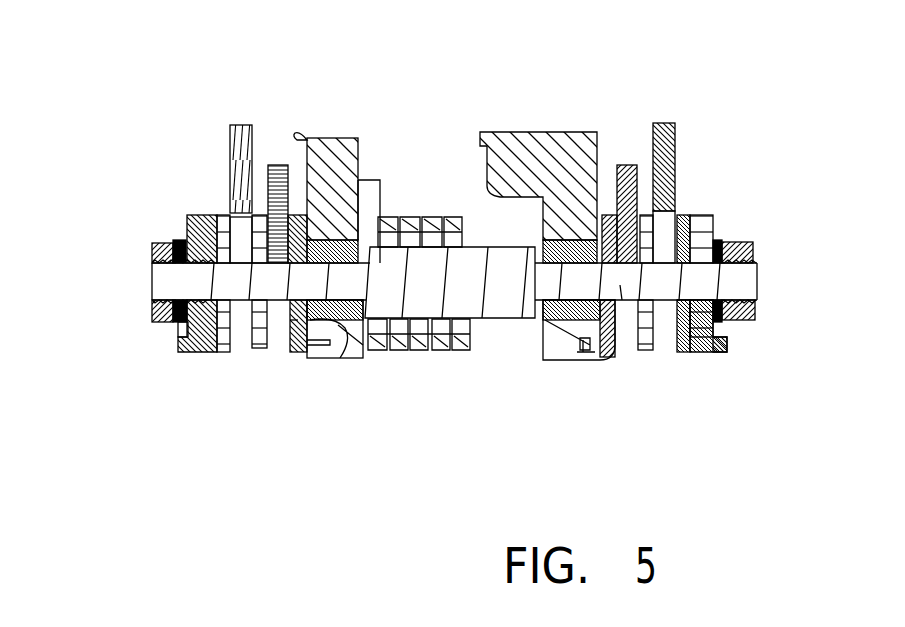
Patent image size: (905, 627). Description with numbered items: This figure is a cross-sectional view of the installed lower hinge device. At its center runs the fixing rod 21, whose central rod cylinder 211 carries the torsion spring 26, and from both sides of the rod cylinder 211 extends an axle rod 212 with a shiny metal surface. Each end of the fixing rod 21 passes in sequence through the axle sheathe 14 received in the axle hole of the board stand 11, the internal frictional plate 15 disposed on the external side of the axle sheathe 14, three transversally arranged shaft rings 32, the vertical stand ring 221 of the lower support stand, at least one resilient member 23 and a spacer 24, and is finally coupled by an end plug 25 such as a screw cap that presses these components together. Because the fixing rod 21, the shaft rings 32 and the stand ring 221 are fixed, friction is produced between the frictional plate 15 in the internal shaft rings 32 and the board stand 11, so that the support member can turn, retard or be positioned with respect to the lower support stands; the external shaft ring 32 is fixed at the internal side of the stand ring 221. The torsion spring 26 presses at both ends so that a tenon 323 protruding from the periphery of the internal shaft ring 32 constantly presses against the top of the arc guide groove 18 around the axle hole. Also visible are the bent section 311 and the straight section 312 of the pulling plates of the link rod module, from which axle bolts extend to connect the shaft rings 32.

The board stand 11 is at (336, 155).
The axle sheathe 14 is at (330, 358).
The internal frictional plate 15 is at (297, 353).
The arc guide groove 18 is at (572, 360).
The fixing rod 21 is at (740, 282).
The resilient member 23 is at (188, 244).
The spacer 24 is at (183, 322).
The end plug 25 is at (152, 247).
The torsion spring 26 is at (422, 350).
The shaft ring 32 is at (225, 216).
The central rod cylinder 211 is at (507, 305).
The axle rod 212 is at (622, 300).
The vertical stand ring 221 is at (205, 355).
The bent section 311 is at (279, 165).
The straight section 312 is at (241, 126).
The tenon 323 is at (590, 357).